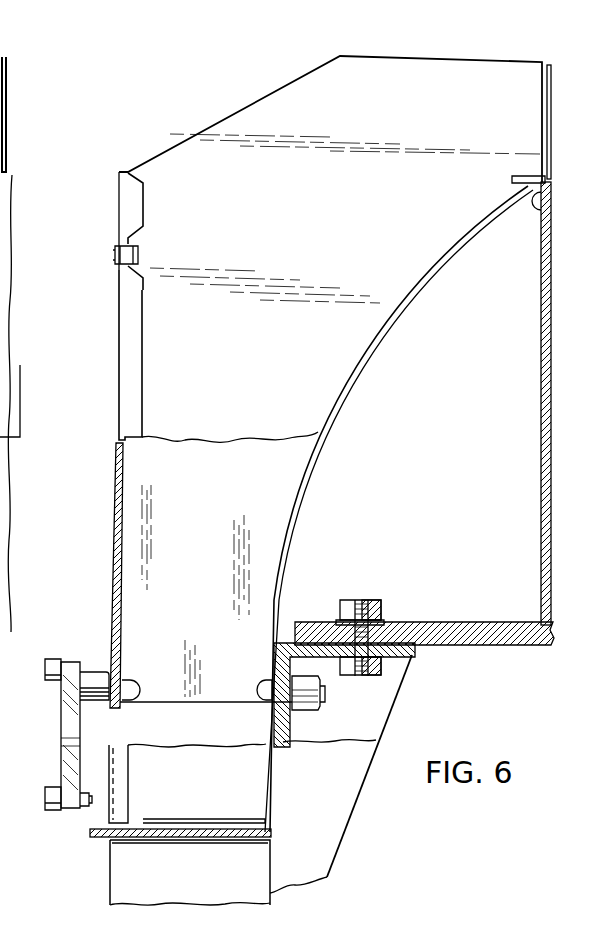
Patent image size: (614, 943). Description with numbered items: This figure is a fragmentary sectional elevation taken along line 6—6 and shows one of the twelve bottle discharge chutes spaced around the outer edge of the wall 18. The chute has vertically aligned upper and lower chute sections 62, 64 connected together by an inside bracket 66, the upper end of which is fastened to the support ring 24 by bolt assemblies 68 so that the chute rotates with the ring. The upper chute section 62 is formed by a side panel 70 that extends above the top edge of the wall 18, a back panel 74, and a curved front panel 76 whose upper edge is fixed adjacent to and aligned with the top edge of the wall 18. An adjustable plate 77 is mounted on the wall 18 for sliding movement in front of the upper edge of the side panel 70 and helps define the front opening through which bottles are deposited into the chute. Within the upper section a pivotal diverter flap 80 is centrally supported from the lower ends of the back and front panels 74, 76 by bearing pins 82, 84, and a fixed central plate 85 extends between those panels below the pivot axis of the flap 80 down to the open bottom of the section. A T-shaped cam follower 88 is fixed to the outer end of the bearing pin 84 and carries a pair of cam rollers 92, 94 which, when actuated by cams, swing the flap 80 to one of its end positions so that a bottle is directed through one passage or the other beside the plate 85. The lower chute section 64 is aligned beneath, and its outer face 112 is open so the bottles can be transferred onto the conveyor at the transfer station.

The section line 6 is at (27, 103).
The wall 18 is at (552, 254).
The support ring 24 is at (472, 645).
The upper chute section 62 is at (118, 366).
The lower chute section 64 is at (120, 878).
The inside bracket 66 is at (326, 853).
The bolt assemblies 68 is at (364, 603).
The side panel 70 is at (424, 128).
The back panel 74 is at (115, 538).
The curved front panel 76 is at (281, 541).
The adjustable plate 77 is at (7, 122).
The diverter flap 80 is at (212, 554).
The bearing pin 82 is at (260, 693).
The bearing pin 84 is at (136, 690).
The fixed central plate 85 is at (200, 735).
The T-shaped cam follower 88 is at (62, 728).
The cam roller 92 is at (45, 668).
The cam roller 94 is at (45, 803).
The outer face 112 is at (110, 855).